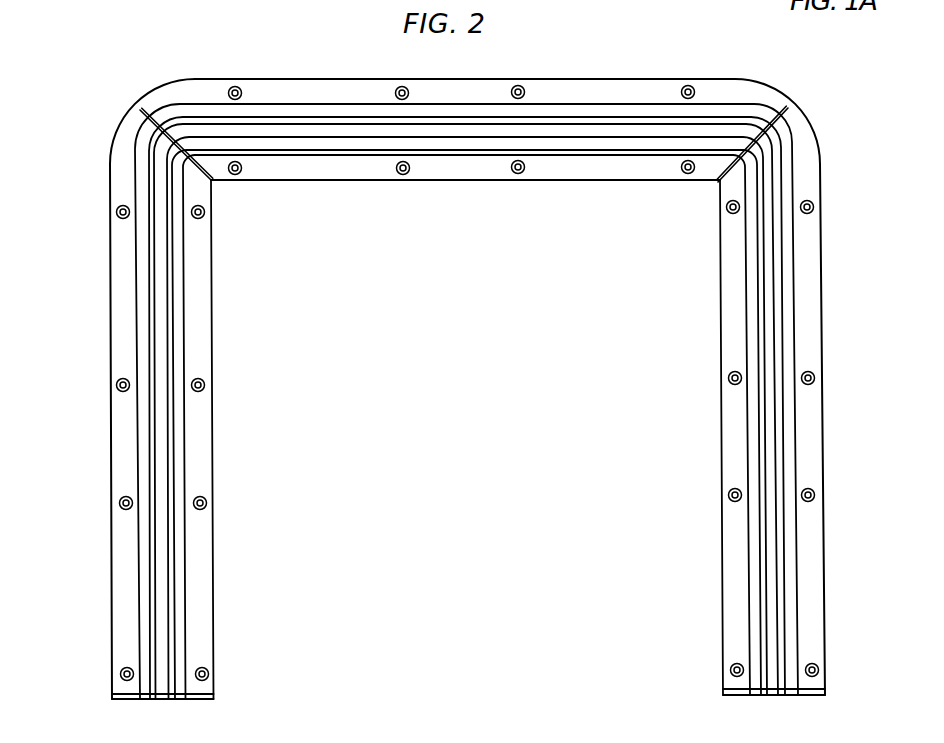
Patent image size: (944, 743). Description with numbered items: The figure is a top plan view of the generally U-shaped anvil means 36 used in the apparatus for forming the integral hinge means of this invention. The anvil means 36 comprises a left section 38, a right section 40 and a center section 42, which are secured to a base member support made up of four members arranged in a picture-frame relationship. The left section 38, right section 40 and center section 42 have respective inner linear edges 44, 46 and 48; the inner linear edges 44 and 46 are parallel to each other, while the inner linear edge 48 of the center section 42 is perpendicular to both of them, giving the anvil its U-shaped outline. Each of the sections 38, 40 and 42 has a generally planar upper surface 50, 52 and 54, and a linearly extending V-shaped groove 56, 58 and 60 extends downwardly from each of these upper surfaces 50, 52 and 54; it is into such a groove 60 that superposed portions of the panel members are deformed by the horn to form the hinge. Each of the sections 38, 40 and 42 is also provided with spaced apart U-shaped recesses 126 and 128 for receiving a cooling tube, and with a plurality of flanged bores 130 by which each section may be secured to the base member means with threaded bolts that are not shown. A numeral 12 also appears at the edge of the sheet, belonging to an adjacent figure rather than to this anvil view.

In FIG. 1A, the door frame 12 is at (702, 31).
In FIG. 2, the anvil means 36 is at (535, 462).
In FIG. 2, the left section 38 is at (206, 620).
In FIG. 2, the right section 40 is at (737, 632).
In FIG. 2, the center section 42 is at (560, 170).
In FIG. 2, the inner linear edge 44 is at (203, 544).
In FIG. 2, the inner linear edge 46 is at (728, 552).
In FIG. 2, the inner linear edge 48 is at (624, 179).
In FIG. 2, the generally planar upper surface 50 is at (212, 306).
In FIG. 2, the generally planar upper surface 52 is at (743, 428).
In FIG. 2, the generally planar upper surface 54 is at (344, 179).
In FIG. 2, the V-shaped groove 56 is at (157, 243).
In FIG. 2, the V-shaped groove 58 is at (767, 312).
In FIG. 2, the V-shaped groove 60 is at (672, 130).
In FIG. 2, the U-shaped recess 126 is at (298, 117).
In FIG. 2, the U-shaped recess 128 is at (178, 460).
In FIG. 2, the flanged bores 130 is at (232, 162).